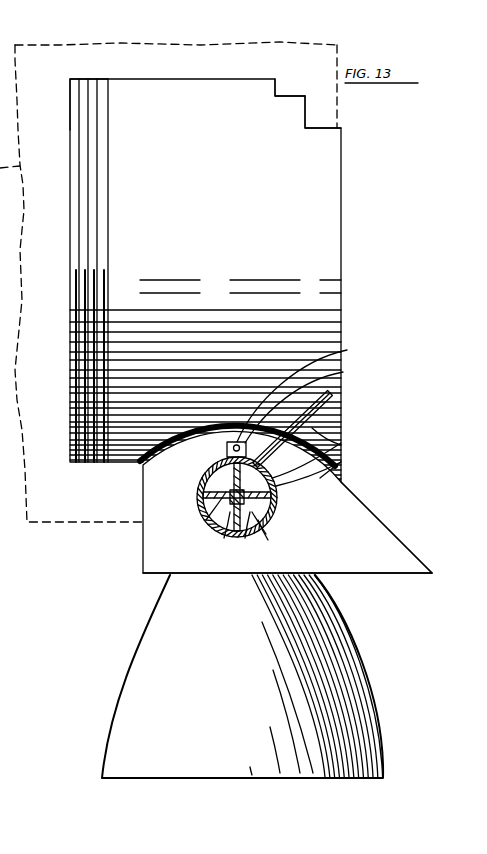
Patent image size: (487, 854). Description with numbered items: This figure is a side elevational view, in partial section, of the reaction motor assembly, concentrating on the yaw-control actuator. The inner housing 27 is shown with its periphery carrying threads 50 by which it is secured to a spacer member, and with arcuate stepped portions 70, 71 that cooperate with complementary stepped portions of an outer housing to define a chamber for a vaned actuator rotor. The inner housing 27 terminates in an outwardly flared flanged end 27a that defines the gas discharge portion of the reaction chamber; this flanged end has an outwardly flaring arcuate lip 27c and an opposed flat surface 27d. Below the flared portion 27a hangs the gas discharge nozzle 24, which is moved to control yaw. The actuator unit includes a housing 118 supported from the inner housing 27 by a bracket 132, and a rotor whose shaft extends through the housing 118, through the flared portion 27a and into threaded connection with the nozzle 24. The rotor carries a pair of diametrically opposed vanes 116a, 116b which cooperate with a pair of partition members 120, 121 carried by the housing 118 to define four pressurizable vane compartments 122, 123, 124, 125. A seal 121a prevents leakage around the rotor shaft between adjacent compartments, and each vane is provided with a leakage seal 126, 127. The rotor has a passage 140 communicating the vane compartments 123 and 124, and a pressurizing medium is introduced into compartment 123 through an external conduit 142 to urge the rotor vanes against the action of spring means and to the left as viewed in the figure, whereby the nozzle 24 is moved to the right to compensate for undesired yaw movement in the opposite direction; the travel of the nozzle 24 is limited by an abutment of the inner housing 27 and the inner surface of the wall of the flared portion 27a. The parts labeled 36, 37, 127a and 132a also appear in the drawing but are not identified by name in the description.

The gas discharge nozzle 24 is at (113, 705).
The inner housing 27 is at (190, 197).
The outwardly flared portion 27a is at (414, 575).
The outwardly flaring arcuate lip 27c is at (386, 526).
The flat surface 27d is at (140, 545).
The element 36 is at (7, 500).
The element 37 is at (6, 519).
The threads 50 is at (85, 79).
The arcuate stepped portion 70 is at (325, 127).
The arcuate stepped portion 71 is at (298, 93).
The vane 116a is at (341, 444).
The vane 116b is at (268, 540).
The actuator housing 118 is at (282, 518).
The partition member 120 is at (206, 520).
The partition member 121 is at (283, 505).
The seal 121a is at (224, 538).
The pressurizable vane compartment 122 is at (214, 491).
The pressurizable vane compartment 123 is at (278, 488).
The pressurizable vane compartment 124 is at (212, 505).
The pressurizable vane compartment 125 is at (286, 509).
The leakage seal 126 is at (226, 480).
The leakage seal 127 is at (245, 538).
The wire end 127a is at (266, 534).
The bracket 132 is at (309, 404).
The cable end 132a is at (310, 393).
The passage 140 is at (341, 462).
The external conduit 142 is at (343, 404).